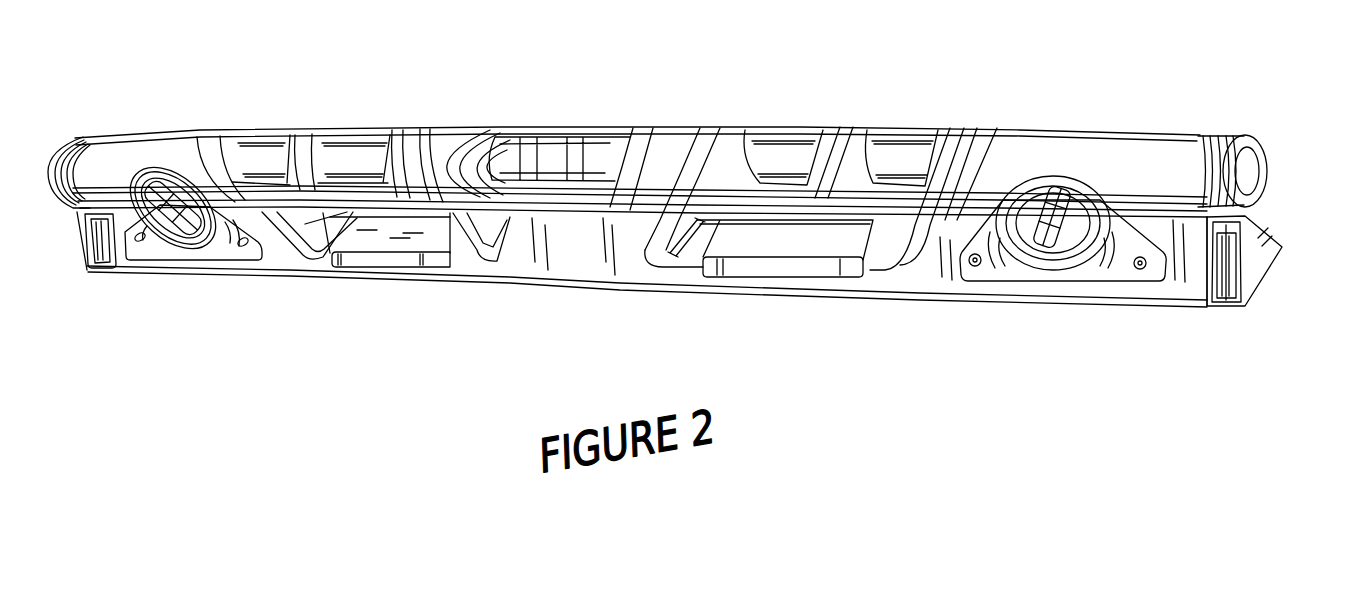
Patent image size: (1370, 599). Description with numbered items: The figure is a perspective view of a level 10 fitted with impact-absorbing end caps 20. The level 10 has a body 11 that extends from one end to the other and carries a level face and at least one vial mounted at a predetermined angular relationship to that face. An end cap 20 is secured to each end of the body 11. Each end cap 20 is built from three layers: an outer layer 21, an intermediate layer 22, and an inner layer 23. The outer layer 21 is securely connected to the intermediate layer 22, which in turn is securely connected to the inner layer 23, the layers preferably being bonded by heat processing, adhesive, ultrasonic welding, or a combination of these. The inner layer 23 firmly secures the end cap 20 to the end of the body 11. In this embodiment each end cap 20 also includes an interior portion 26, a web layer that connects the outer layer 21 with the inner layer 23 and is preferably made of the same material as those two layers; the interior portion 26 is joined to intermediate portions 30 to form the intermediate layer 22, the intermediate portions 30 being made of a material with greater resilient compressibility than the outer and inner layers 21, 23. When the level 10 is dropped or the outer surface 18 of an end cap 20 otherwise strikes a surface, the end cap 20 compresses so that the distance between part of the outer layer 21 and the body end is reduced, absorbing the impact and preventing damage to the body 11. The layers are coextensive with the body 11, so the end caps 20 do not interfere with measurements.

The level 10 is at (270, 262).
The body 11 is at (828, 167).
The outer surface 18 is at (1257, 213).
The end cap 20 is at (70, 138).
The outer layer 21 is at (1243, 137).
The intermediate layer 22 is at (1233, 133).
The inner layer 23 is at (1210, 137).
The interior portion 26 is at (1213, 302).
The intermediate portion 30 is at (1233, 263).